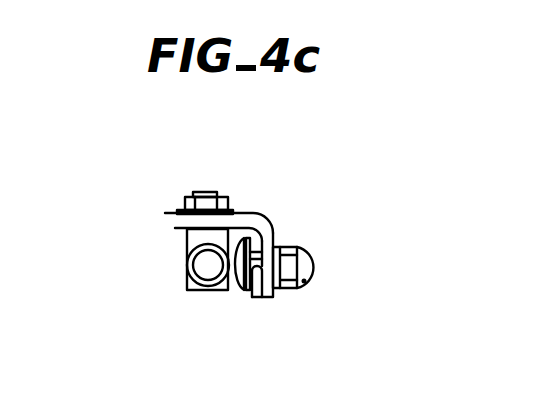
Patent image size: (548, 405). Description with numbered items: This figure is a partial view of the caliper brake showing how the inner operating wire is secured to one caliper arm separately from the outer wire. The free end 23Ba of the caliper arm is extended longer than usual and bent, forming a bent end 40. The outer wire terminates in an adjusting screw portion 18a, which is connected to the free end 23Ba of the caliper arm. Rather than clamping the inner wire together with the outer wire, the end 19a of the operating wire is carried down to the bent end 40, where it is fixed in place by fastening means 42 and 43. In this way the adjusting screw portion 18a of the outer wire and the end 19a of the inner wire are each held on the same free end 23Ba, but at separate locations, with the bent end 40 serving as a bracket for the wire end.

The free end 23Ba is at (175, 228).
The adjusting screw portion 18a is at (208, 264).
The fastening means 42 is at (298, 247).
The bent end 40 is at (278, 297).
The fastening means 43 is at (237, 291).
The end of the operating wire 19a is at (263, 298).